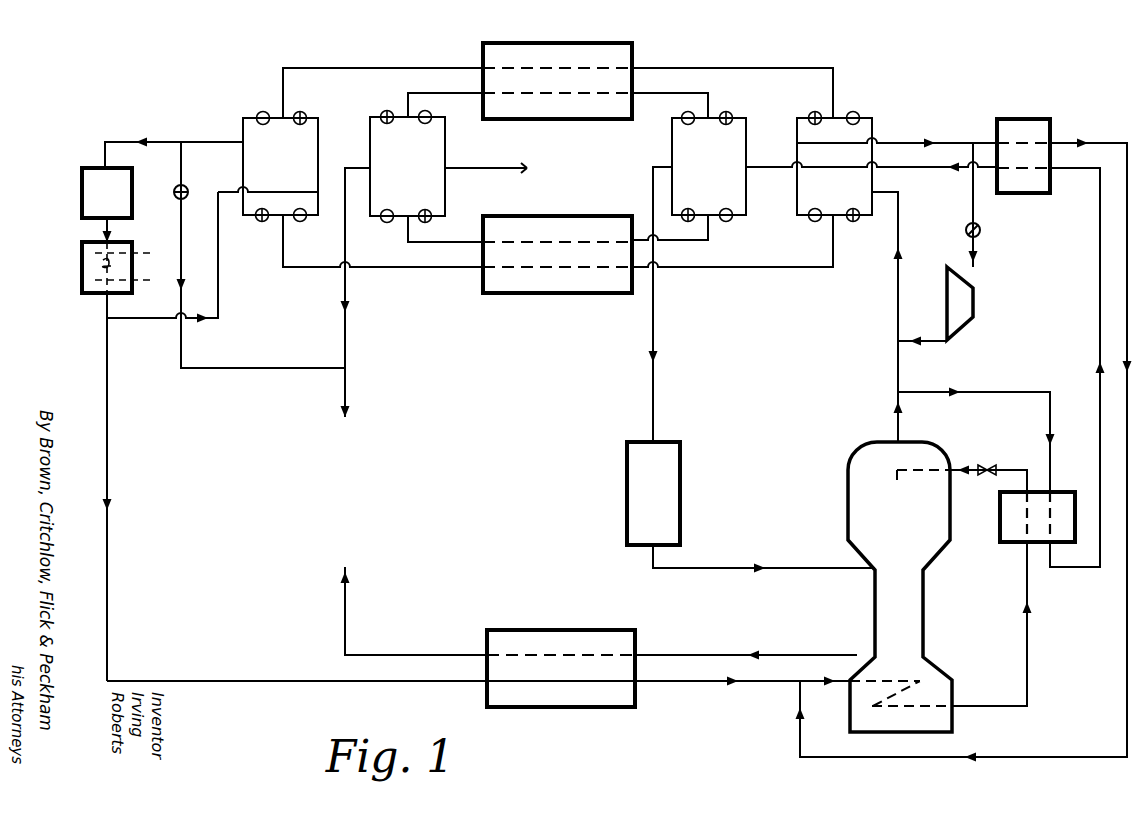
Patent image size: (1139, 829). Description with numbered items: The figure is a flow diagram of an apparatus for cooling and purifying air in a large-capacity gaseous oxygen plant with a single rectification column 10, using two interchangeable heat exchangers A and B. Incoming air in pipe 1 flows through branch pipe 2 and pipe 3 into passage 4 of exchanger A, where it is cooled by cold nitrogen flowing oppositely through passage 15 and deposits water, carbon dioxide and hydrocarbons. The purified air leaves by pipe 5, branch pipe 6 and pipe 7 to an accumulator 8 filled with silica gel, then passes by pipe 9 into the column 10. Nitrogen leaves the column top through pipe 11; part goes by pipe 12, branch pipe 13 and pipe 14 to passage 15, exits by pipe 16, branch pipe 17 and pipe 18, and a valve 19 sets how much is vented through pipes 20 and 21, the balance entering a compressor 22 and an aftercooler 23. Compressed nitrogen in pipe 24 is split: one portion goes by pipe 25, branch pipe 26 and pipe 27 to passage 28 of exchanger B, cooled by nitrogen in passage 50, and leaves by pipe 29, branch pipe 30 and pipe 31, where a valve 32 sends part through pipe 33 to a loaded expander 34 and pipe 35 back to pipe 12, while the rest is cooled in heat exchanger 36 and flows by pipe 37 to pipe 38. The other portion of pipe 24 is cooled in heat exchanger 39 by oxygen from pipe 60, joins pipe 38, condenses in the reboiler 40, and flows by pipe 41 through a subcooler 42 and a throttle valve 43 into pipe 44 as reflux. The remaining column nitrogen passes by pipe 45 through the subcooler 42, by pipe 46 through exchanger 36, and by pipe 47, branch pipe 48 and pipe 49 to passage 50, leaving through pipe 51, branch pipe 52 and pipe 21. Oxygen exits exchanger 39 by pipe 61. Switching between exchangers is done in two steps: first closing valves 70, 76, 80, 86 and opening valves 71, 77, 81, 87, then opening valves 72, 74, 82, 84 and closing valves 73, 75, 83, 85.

The pipe 1 is at (482, 165).
The branch pipe 2 is at (445, 147).
The pipe 3 is at (440, 93).
The passage 4 is at (548, 100).
The pipe 5 is at (668, 92).
The branch pipe 6 is at (672, 145).
The pipe 7 is at (653, 322).
The accumulator 8 is at (680, 478).
The pipe 9 is at (793, 568).
The rectification column 10 is at (848, 478).
The pipe 11 is at (898, 423).
The pipe 12 is at (898, 293).
The branch pipe 13 is at (872, 187).
The pipe 14 is at (833, 68).
The passage 15 is at (612, 68).
The pipe 16 is at (390, 68).
The branch pipe 17 is at (250, 160).
The pipe 18 is at (172, 142).
The valve 19 is at (188, 192).
The pipe 20 is at (183, 270).
The pipe 21 is at (347, 330).
The compressor 22 is at (85, 165).
The aftercooler 23 is at (82, 255).
The pipe 24 is at (110, 452).
The pipe 25 is at (142, 320).
The branch pipe 26 is at (318, 179).
The pipe 27 is at (412, 268).
The passage 28 is at (500, 293).
The pipe 29 is at (763, 268).
The branch pipe 30 is at (797, 190).
The pipe 31 is at (922, 143).
The valve 32 is at (980, 230).
The pipe 33 is at (972, 205).
The loaded expander 34 is at (975, 300).
The pipe 35 is at (933, 341).
The heat exchanger 36 is at (1025, 119).
The pipe 37 is at (1127, 340).
The pipe 38 is at (705, 681).
The heat exchanger 39 is at (530, 630).
The reboiler 40 is at (920, 690).
The pipe 41 is at (1027, 660).
The subcooler 42 is at (1007, 542).
The throttle valve 43 is at (987, 465).
The pipe 44 is at (955, 472).
The pipe 45 is at (992, 392).
The pipe 46 is at (1098, 440).
The pipe 47 is at (936, 168).
The branch pipe 48 is at (746, 183).
The pipe 49 is at (680, 243).
The passage 50 is at (590, 216).
The pipe 51 is at (460, 242).
The branch pipe 52 is at (373, 177).
The pipe 60 is at (723, 655).
The pipe 61 is at (380, 655).
The valve 70 is at (258, 113).
The valve 71 is at (305, 112).
The valve 72 is at (383, 112).
The valve 73 is at (432, 114).
The valve 74 is at (430, 222).
The valve 75 is at (386, 223).
The valve 76 is at (302, 222).
The valve 77 is at (263, 222).
The valve 80 is at (857, 112).
The valve 81 is at (812, 112).
The valve 82 is at (730, 112).
The valve 83 is at (682, 115).
The valve 84 is at (686, 222).
The valve 85 is at (730, 222).
The valve 86 is at (813, 222).
The valve 87 is at (855, 222).